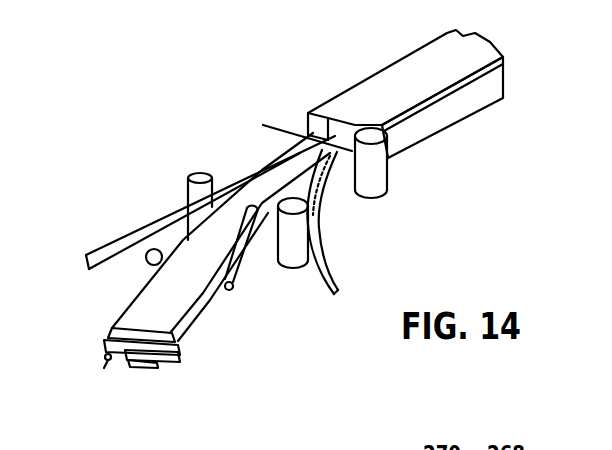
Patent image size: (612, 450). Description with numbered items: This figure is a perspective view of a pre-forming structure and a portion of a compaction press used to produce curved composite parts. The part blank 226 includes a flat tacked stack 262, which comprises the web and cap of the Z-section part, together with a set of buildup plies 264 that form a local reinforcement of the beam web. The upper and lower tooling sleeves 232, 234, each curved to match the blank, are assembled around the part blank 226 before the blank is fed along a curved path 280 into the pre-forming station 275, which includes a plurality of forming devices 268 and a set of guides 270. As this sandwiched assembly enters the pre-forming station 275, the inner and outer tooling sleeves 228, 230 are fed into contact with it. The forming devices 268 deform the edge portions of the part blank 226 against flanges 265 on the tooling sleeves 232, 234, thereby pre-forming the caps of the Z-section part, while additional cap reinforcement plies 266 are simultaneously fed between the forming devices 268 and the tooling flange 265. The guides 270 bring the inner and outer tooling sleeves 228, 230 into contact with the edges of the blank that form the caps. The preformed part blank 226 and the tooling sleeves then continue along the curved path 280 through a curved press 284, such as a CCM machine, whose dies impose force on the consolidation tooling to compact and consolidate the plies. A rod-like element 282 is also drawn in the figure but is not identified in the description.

The part blank 226 is at (108, 326).
The inner tooling sleeve 228 is at (335, 275).
The outer tooling sleeve 230 is at (119, 239).
The upper tooling sleeve 232 is at (107, 369).
The lower tooling sleeve 234 is at (147, 317).
The flat tacked stack 262 is at (190, 337).
The buildup plies 264 is at (128, 362).
The flange 265 is at (173, 307).
The cap reinforcement plies 266 is at (227, 308).
The forming devices 268 is at (176, 240).
The guides 270 is at (378, 157).
The pre-forming station 275 is at (181, 121).
The curved path 280 is at (370, 225).
The rod 282 is at (233, 288).
The curved press 284 is at (360, 80).